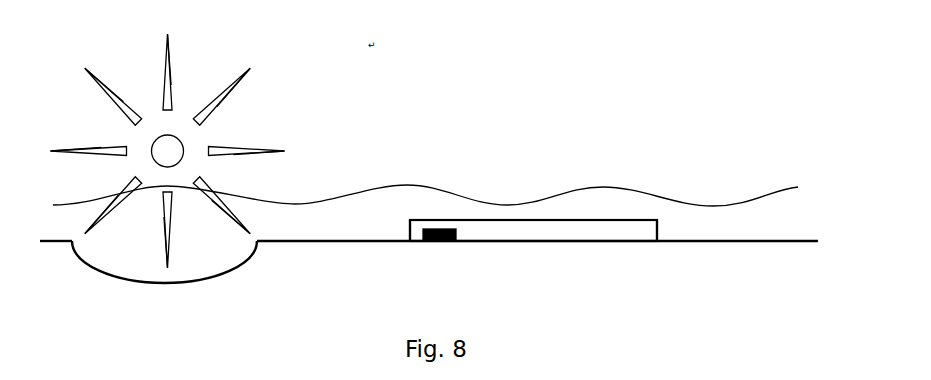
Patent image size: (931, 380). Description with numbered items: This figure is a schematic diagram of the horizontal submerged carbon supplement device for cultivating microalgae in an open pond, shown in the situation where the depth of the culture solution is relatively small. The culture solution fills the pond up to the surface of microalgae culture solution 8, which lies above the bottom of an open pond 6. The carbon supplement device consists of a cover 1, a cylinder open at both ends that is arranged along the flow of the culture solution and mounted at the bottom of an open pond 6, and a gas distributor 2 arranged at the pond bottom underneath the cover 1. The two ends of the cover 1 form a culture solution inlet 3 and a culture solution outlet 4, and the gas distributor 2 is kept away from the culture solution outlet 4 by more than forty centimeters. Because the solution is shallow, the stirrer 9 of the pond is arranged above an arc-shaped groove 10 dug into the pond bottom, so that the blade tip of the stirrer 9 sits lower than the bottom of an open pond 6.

The cover 1 is at (526, 216).
The gas distributor 2 is at (444, 229).
The culture solution inlet 3 is at (406, 224).
The culture solution outlet 4 is at (659, 229).
The bottom of an open pond 6 is at (298, 238).
The surface of microalgae culture solution 8 is at (659, 193).
The stirrer 9 is at (233, 97).
The arc-shaped groove 10 is at (244, 267).